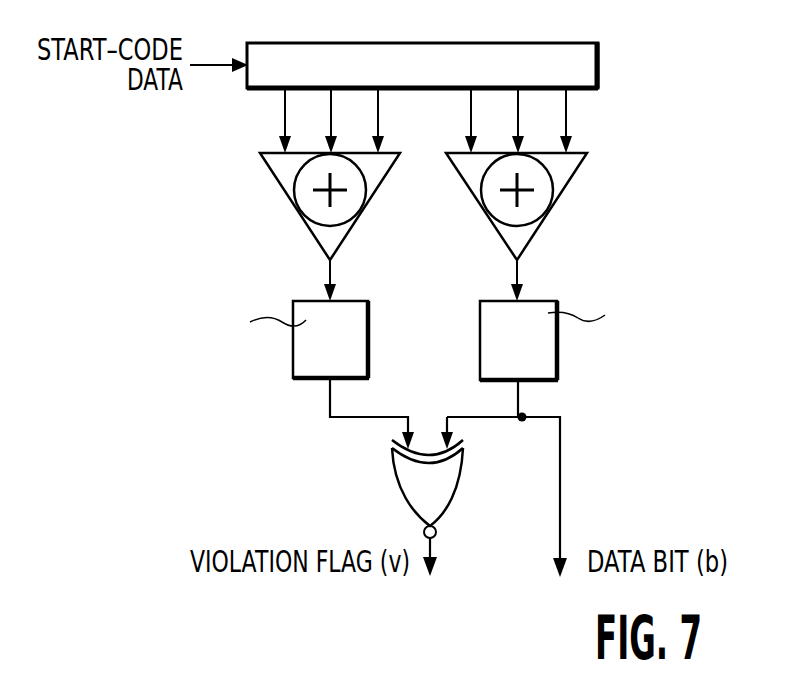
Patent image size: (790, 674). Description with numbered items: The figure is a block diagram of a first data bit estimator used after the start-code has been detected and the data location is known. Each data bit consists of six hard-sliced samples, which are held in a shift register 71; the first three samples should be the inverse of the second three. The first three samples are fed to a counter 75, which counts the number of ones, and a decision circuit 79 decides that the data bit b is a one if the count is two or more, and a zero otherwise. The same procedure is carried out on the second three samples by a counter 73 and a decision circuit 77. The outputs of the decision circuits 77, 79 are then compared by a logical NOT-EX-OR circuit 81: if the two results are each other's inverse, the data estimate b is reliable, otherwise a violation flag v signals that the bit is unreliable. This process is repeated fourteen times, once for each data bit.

The shift register 71 is at (547, 50).
The counter 73 is at (285, 177).
The counter 75 is at (563, 172).
The decision circuit 77 is at (301, 360).
The decision circuit 79 is at (550, 360).
The logical NOT-EX-OR circuit 81 is at (405, 475).